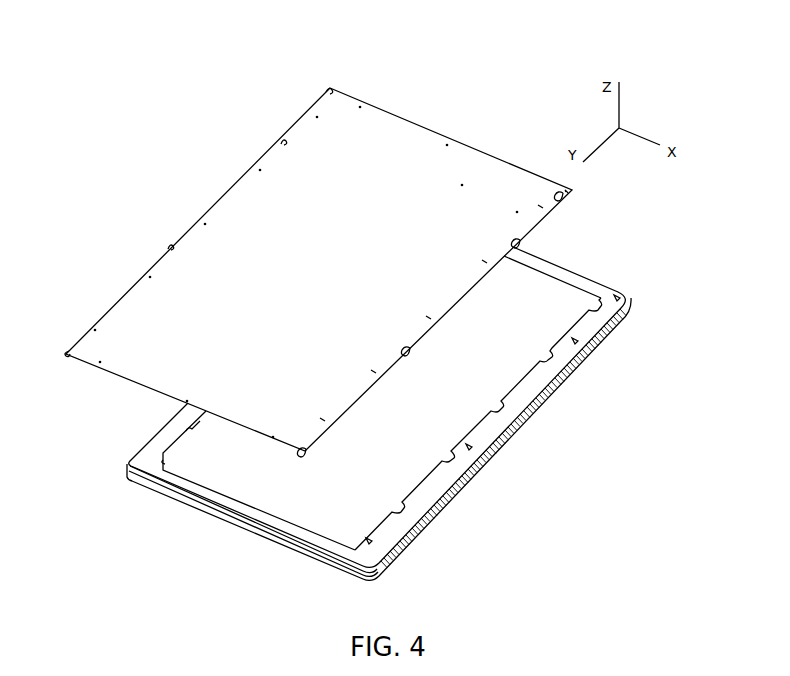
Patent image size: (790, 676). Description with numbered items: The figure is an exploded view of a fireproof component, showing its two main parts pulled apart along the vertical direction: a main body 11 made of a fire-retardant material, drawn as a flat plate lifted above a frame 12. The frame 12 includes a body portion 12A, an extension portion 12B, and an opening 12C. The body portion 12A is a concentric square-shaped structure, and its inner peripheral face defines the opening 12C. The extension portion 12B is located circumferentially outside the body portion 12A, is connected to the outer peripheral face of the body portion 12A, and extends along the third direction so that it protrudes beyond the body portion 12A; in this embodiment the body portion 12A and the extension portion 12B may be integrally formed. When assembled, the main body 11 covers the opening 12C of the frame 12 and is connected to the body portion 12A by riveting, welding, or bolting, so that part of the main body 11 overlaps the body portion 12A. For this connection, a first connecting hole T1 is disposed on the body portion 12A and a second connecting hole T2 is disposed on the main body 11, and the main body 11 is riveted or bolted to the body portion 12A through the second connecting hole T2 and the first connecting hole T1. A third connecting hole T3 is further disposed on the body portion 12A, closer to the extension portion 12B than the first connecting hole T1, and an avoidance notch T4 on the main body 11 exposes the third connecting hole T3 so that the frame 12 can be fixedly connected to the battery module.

The main body 11 is at (124, 399).
The frame 12 is at (381, 427).
The body portion 12A is at (300, 534).
The extension portion 12B is at (208, 506).
The opening 12C is at (414, 428).
The first connecting hole T1 is at (592, 304).
The second connecting hole T2 is at (540, 207).
The third connecting hole T3 is at (620, 297).
The avoidance notch T4 is at (568, 199).